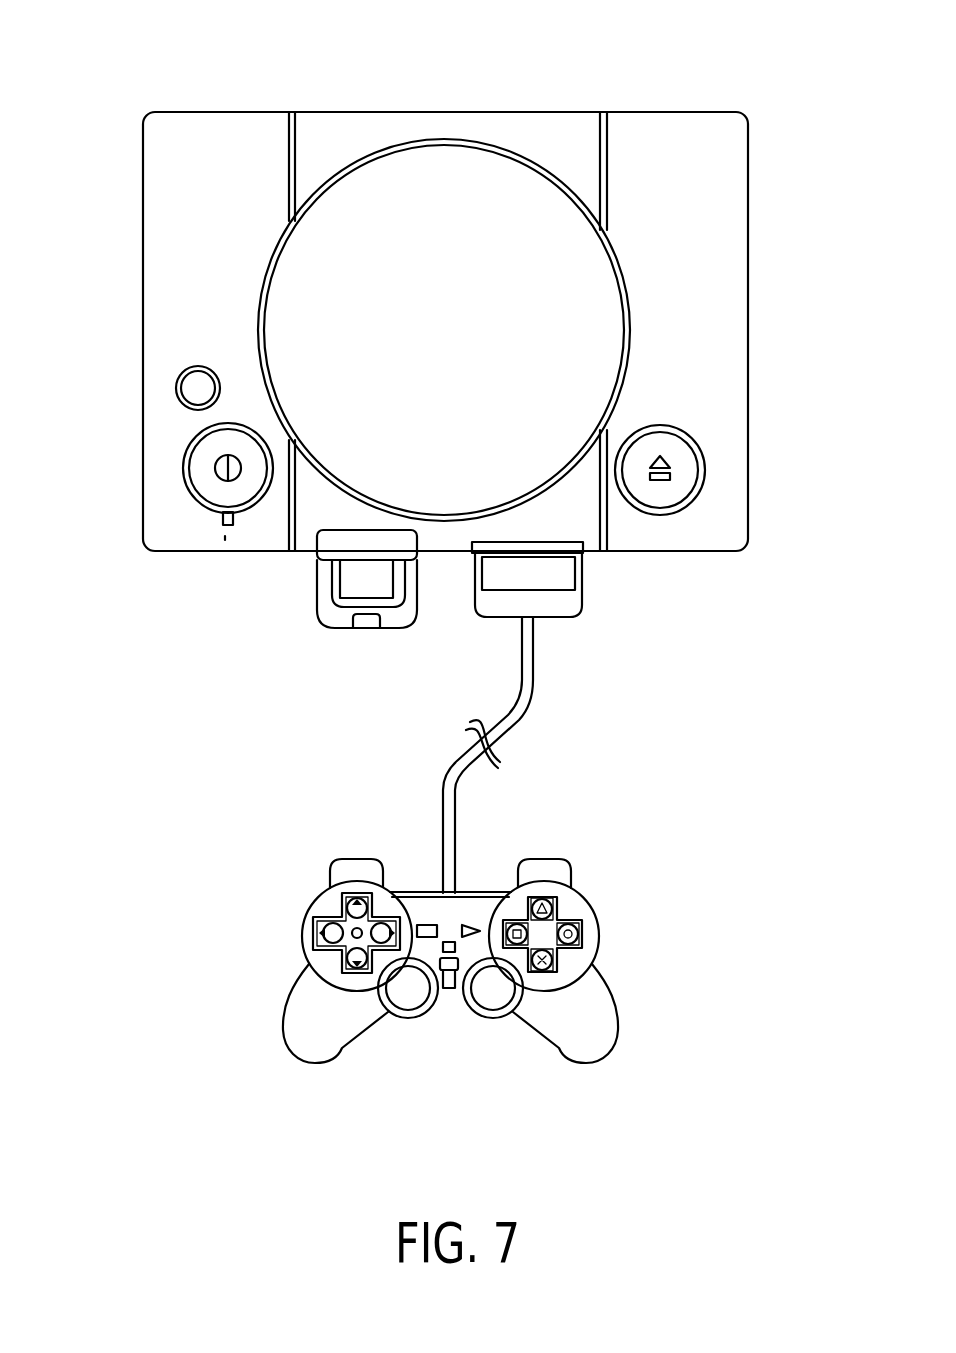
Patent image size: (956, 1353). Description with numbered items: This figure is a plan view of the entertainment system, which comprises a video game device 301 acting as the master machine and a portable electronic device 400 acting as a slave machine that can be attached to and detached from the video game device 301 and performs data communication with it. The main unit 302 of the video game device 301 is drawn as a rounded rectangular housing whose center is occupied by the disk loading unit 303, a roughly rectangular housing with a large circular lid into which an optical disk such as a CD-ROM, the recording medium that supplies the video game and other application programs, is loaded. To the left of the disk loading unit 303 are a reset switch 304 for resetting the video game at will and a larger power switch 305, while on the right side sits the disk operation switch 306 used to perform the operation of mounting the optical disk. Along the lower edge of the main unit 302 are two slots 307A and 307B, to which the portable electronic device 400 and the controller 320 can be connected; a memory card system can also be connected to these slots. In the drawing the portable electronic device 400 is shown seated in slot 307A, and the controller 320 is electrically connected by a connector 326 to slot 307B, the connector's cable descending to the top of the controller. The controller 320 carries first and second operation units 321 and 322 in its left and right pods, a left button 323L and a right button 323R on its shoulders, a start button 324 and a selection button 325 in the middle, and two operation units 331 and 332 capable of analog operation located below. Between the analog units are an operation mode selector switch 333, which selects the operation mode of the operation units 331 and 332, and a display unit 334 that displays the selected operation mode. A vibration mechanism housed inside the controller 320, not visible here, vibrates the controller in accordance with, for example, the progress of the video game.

The video game device 301 is at (648, 100).
The main unit 302 is at (727, 551).
The disk loading unit 303 is at (483, 172).
The reset switch 304 is at (188, 392).
The power switch 305 is at (198, 467).
The disk operation switch 306 is at (687, 463).
The slot 307A is at (317, 556).
The slot 307B is at (583, 555).
The portable electronic device 400 is at (288, 643).
The connector 326 is at (558, 618).
The controller 320 is at (634, 955).
The first operation unit 321 is at (328, 912).
The second operation unit 322 is at (570, 908).
The left button 323L is at (328, 841).
The right button 323R is at (567, 841).
The start button 324 is at (473, 920).
The selection button 325 is at (428, 922).
The operation unit capable of analog operation 331 is at (405, 1000).
The operation unit capable of analog operation 332 is at (496, 1000).
The operation mode selector switch 333 is at (441, 995).
The display unit 334 is at (452, 990).